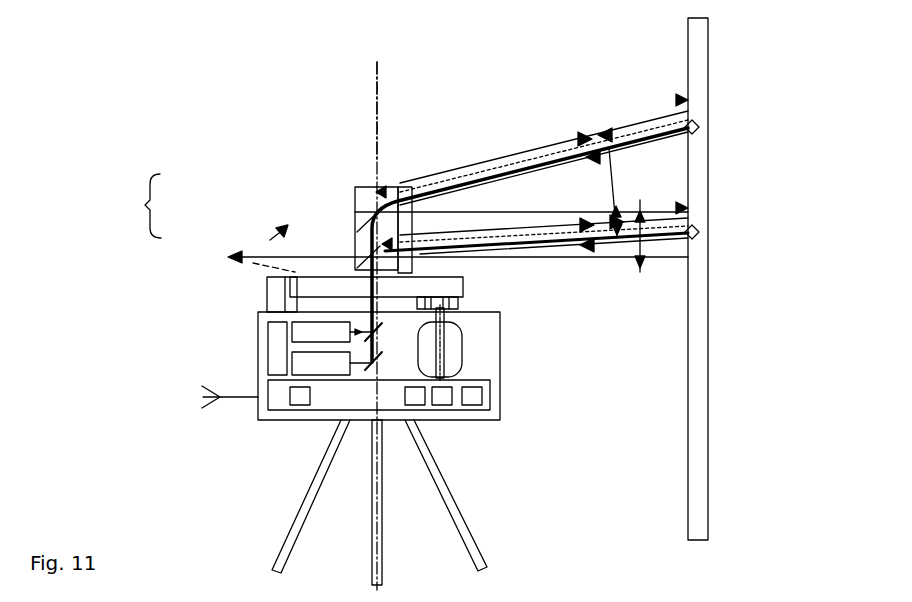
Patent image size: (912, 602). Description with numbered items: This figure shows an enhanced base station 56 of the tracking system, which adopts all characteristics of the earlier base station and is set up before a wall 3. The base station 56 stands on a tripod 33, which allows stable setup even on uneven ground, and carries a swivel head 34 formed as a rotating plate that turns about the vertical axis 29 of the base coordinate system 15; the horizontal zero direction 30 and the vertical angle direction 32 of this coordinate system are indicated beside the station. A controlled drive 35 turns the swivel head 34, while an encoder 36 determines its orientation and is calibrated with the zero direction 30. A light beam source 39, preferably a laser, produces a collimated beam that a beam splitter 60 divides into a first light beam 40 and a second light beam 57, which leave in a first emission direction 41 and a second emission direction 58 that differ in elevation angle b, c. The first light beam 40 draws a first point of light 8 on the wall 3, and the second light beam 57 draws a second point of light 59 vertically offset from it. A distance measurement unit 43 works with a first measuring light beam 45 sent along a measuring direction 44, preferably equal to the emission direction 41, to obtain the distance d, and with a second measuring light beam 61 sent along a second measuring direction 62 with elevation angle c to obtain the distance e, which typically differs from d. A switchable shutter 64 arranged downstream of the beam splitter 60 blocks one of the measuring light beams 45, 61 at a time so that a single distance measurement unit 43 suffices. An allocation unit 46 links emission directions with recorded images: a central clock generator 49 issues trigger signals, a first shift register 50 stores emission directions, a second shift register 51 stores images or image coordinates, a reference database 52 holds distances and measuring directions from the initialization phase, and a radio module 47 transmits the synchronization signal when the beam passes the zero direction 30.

The wall 3 is at (700, 53).
The first point of light 8 is at (693, 230).
The base coordinate system 15 is at (133, 206).
The axis 29 is at (377, 155).
The zero direction 30 is at (253, 263).
The vertical angle direction 32 is at (270, 240).
The tripod 33 is at (453, 497).
The swivel head 34 is at (323, 290).
The drive 35 is at (453, 347).
The encoder 36 is at (283, 305).
The light beam source 39 is at (307, 362).
The first light beam 40 is at (487, 250).
The emission direction 41 is at (568, 252).
The distance measurement unit 43 is at (305, 330).
The measuring direction 44 is at (594, 254).
The first measuring light beam 45 is at (522, 250).
The allocation unit 46 is at (265, 413).
The radio module 47 is at (233, 402).
The central clock generator 49 is at (300, 405).
The first shift register 50 is at (412, 400).
The second shift register 51 is at (443, 400).
The reference database 52 is at (473, 400).
The enhanced base station 56 is at (156, 80).
The second light beam 57 is at (482, 167).
The second emission direction 58 is at (562, 163).
The second point of light 59 is at (693, 123).
The beam splitter 60 is at (365, 203).
The second measuring light beam 61 is at (508, 150).
The second measuring direction 62 is at (548, 145).
The switchable shutter 64 is at (405, 185).
The elevation angle b is at (688, 245).
The elevation angle c is at (613, 173).
The distance d is at (688, 208).
The distance e is at (690, 100).